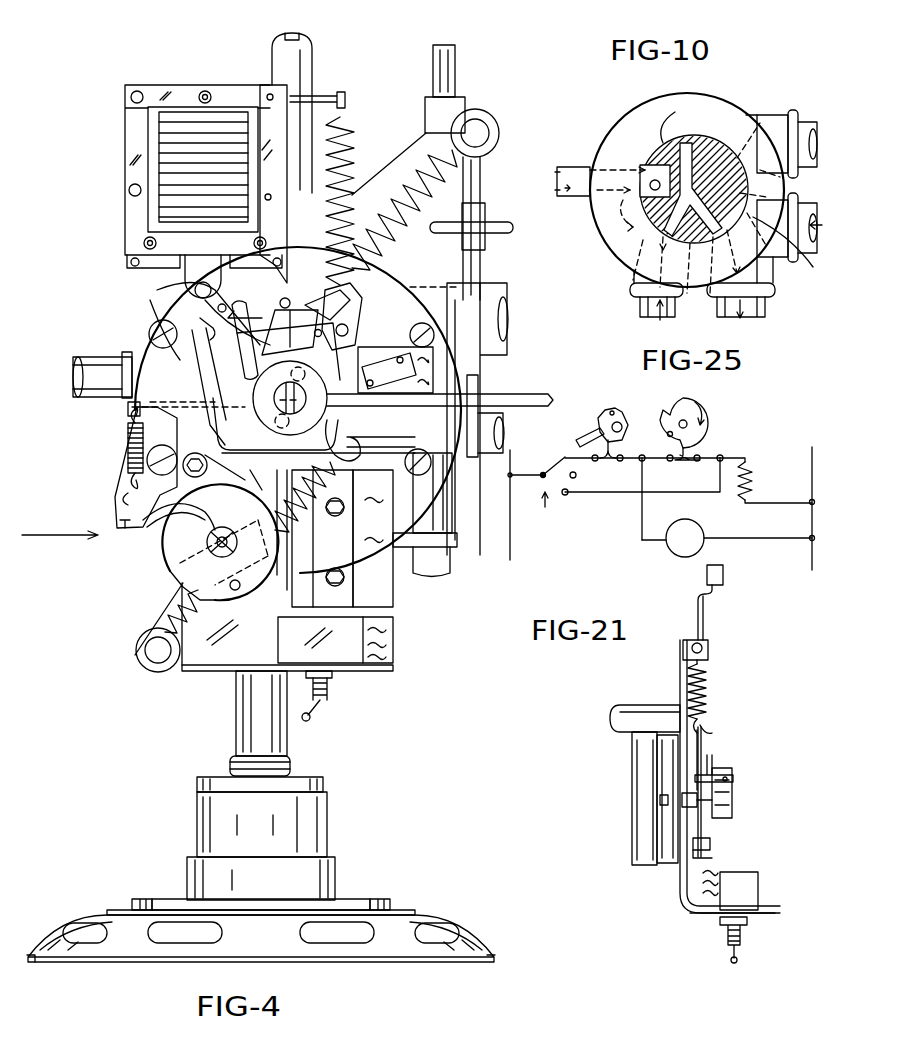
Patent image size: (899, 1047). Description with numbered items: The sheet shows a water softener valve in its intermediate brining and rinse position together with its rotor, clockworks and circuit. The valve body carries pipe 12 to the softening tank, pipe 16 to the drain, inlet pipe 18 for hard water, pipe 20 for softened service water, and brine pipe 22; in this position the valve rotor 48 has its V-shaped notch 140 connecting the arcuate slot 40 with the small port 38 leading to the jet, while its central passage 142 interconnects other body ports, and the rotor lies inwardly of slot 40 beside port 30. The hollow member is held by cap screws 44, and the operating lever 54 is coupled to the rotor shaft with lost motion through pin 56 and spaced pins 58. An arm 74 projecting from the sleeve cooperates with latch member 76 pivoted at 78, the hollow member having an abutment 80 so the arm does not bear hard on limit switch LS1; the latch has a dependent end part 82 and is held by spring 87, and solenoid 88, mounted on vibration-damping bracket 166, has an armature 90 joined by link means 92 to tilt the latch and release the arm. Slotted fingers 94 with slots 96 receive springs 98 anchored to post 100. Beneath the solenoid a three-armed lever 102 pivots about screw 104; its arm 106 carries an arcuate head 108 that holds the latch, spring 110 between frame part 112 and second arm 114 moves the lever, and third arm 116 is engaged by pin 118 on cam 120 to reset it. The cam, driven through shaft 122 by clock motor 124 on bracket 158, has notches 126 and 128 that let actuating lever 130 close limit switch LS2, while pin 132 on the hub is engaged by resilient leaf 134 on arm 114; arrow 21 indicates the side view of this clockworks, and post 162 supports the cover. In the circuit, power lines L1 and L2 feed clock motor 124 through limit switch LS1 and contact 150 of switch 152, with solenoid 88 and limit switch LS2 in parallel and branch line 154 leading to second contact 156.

In FIG. 4, the pipe 12 is at (278, 742).
In FIG. 10, the pipe 12 is at (673, 308).
In FIG. 4, the pipe 16 is at (445, 575).
In FIG. 10, the pipe 16 is at (760, 306).
In FIG. 4, the pipe 18 is at (490, 452).
In FIG. 10, the pipe 18 is at (806, 205).
In FIG. 4, the pipe 20 is at (494, 298).
In FIG. 10, the pipe 20 is at (805, 128).
In FIG. 4, the arrow 21 is at (60, 525).
In FIG. 4, the pipe 22 is at (99, 356).
In FIG. 10, the pipe 22 is at (573, 170).
In FIG. 10, the port 30 is at (695, 125).
In FIG. 10, the port 38 is at (663, 143).
In FIG. 10, the arcuate slot 40 is at (825, 262).
In FIG. 4, the cap screws 44 is at (158, 338).
In FIG. 10, the valve rotor 48 is at (640, 232).
In FIG. 4, the operating lever 54 is at (517, 397).
In FIG. 4, the pin 56 is at (213, 420).
In FIG. 4, the spaced pins 58 is at (302, 372).
In FIG. 4, the arm 74 is at (338, 318).
In FIG. 25, the arm 74 is at (592, 436).
In FIG. 4, the latch member 76 is at (352, 306).
In FIG. 25, the latch member 76 is at (608, 410).
In FIG. 4, the pivot 78 is at (287, 298).
In FIG. 4, the abutment 80 is at (303, 392).
In FIG. 4, the dependent end part 82 is at (190, 281).
In FIG. 4, the spring 87 is at (346, 100).
In FIG. 4, the solenoid 88 is at (165, 183).
In FIG. 25, the solenoid 88 is at (752, 466).
In FIG. 4, the armature 90 is at (172, 246).
In FIG. 4, the link means 92 is at (204, 268).
In FIG. 4, the slotted fingers 94 is at (192, 410).
In FIG. 4, the slot 96 is at (224, 334).
In FIG. 4, the spring 98 is at (399, 160).
In FIG. 4, the anchor post 100 is at (486, 146).
In FIG. 4, the three-armed lever 102 is at (201, 428).
In FIG. 4, the screw 104 is at (193, 484).
In FIG. 21, the screw 104 is at (710, 728).
In FIG. 4, the arm 106 is at (195, 392).
In FIG. 21, the arm 106 is at (702, 610).
In FIG. 4, the arcuate head 108 is at (206, 328).
In FIG. 21, the arcuate head 108 is at (723, 577).
In FIG. 4, the spring 110 is at (132, 455).
In FIG. 21, the spring 110 is at (707, 697).
In FIG. 4, the frame part 112 is at (132, 407).
In FIG. 21, the frame part 112 is at (682, 676).
In FIG. 4, the second arm 114 is at (127, 491).
In FIG. 21, the second arm 114 is at (712, 758).
In FIG. 4, the third arm 116 is at (267, 484).
In FIG. 4, the pin 118 is at (240, 582).
In FIG. 21, the pin 118 is at (706, 856).
In FIG. 4, the cam 120 is at (247, 600).
In FIG. 25, the cam 120 is at (700, 400).
In FIG. 21, the cam 120 is at (733, 806).
In FIG. 21, the shaft 122 is at (703, 808).
In FIG. 25, the clock motor 124 is at (670, 549).
In FIG. 21, the clock motor 124 is at (632, 810).
In FIG. 4, the notch 126 is at (181, 592).
In FIG. 4, the notch 128 is at (272, 570).
In FIG. 4, the actuating lever 130 is at (293, 560).
In FIG. 4, the pin 132 is at (222, 563).
In FIG. 4, the resilient leaf 134 is at (207, 543).
In FIG. 21, the resilient leaf 134 is at (735, 780).
In FIG. 10, the V-shaped notch 140 is at (648, 178).
In FIG. 10, the central passage 142 is at (698, 140).
In FIG. 25, the contact 150 is at (565, 457).
In FIG. 4, the switch 152 is at (350, 662).
In FIG. 25, the switch 152 is at (544, 517).
In FIG. 21, the switch 152 is at (745, 876).
In FIG. 25, the line 154 is at (628, 494).
In FIG. 25, the second contact 156 is at (567, 495).
In FIG. 4, the bracket 158 is at (210, 668).
In FIG. 21, the bracket 158 is at (684, 912).
In FIG. 4, the post 162 is at (306, 78).
In FIG. 4, the bracket 166 is at (288, 203).
In FIG. 4, the limit switch LS1 is at (380, 368).
In FIG. 25, the limit switch LS1 is at (599, 466).
In FIG. 4, the limit switch LS2 is at (347, 593).
In FIG. 25, the limit switch LS2 is at (675, 470).
In FIG. 25, the power line L1 is at (513, 492).
In FIG. 25, the power line L2 is at (809, 494).